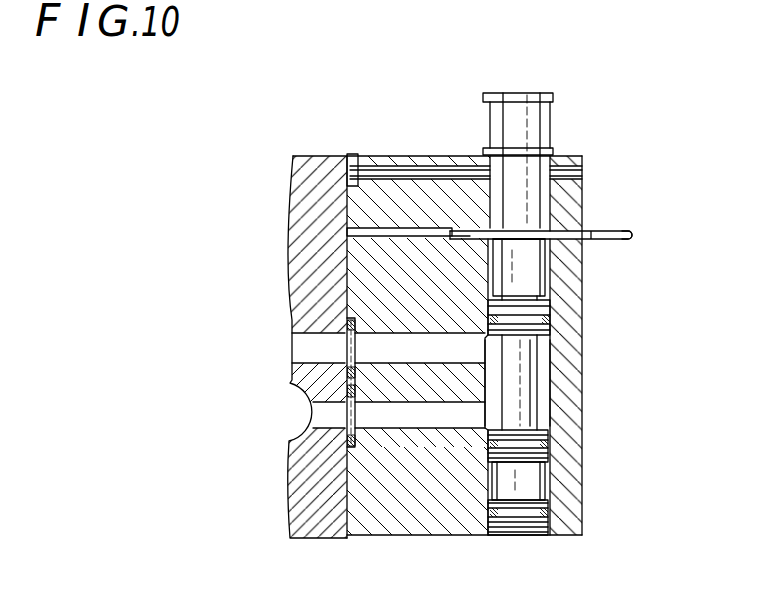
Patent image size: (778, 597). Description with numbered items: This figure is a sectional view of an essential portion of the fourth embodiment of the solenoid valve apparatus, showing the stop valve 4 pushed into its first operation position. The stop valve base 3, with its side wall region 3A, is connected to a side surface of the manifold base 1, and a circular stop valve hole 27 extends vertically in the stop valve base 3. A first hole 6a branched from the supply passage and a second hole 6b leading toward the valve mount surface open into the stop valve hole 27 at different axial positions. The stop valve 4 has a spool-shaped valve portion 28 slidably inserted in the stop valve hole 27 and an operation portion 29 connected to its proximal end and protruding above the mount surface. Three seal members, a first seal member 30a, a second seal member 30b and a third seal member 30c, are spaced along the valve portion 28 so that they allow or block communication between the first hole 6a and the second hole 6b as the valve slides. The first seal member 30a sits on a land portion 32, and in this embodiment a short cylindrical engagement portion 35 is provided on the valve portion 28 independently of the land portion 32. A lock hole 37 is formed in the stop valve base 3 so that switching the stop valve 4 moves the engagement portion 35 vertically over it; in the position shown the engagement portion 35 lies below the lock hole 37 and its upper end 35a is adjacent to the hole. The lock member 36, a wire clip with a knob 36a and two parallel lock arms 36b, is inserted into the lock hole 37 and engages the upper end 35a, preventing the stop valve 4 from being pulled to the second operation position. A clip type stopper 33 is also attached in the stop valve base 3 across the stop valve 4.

The manifold base 1 is at (327, 515).
The stop valve base 3 is at (377, 507).
The body side wall 3A is at (583, 486).
The stop valve 4 is at (530, 86).
The first hole 6a is at (323, 418).
The second hole 6b is at (312, 350).
The stop valve hole 27 is at (509, 468).
The valve portion 28 is at (546, 390).
The operation portion 29 is at (535, 123).
The first seal member 30a is at (549, 345).
The second seal member 30b is at (550, 447).
The third seal member 30c is at (556, 528).
The land portion 32 is at (548, 311).
The stopper 33 is at (412, 175).
The engagement portion 35 is at (518, 273).
The upper end 35a is at (517, 242).
The lock member 36 is at (621, 222).
The knob 36a is at (632, 237).
The lock arm 36b is at (472, 230).
The lock hole 37 is at (386, 232).